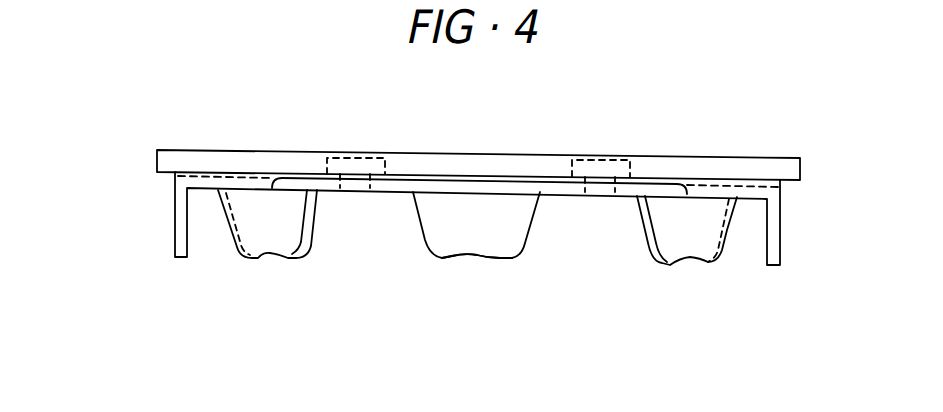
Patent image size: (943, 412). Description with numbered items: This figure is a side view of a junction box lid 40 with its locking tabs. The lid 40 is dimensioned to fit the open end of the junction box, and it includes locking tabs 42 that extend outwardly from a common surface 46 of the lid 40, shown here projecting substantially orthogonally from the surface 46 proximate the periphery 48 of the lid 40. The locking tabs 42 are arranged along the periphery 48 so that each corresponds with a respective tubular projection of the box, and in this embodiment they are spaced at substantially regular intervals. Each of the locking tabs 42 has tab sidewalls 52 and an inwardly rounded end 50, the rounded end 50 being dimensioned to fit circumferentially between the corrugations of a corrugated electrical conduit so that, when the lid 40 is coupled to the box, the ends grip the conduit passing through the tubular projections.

The lid 40 is at (658, 156).
The locking tabs 42 is at (703, 238).
The surface 46 is at (355, 190).
The periphery 48 is at (178, 178).
The inwardly rounded ends 50 is at (462, 257).
The tab sidewalls 52 is at (532, 230).